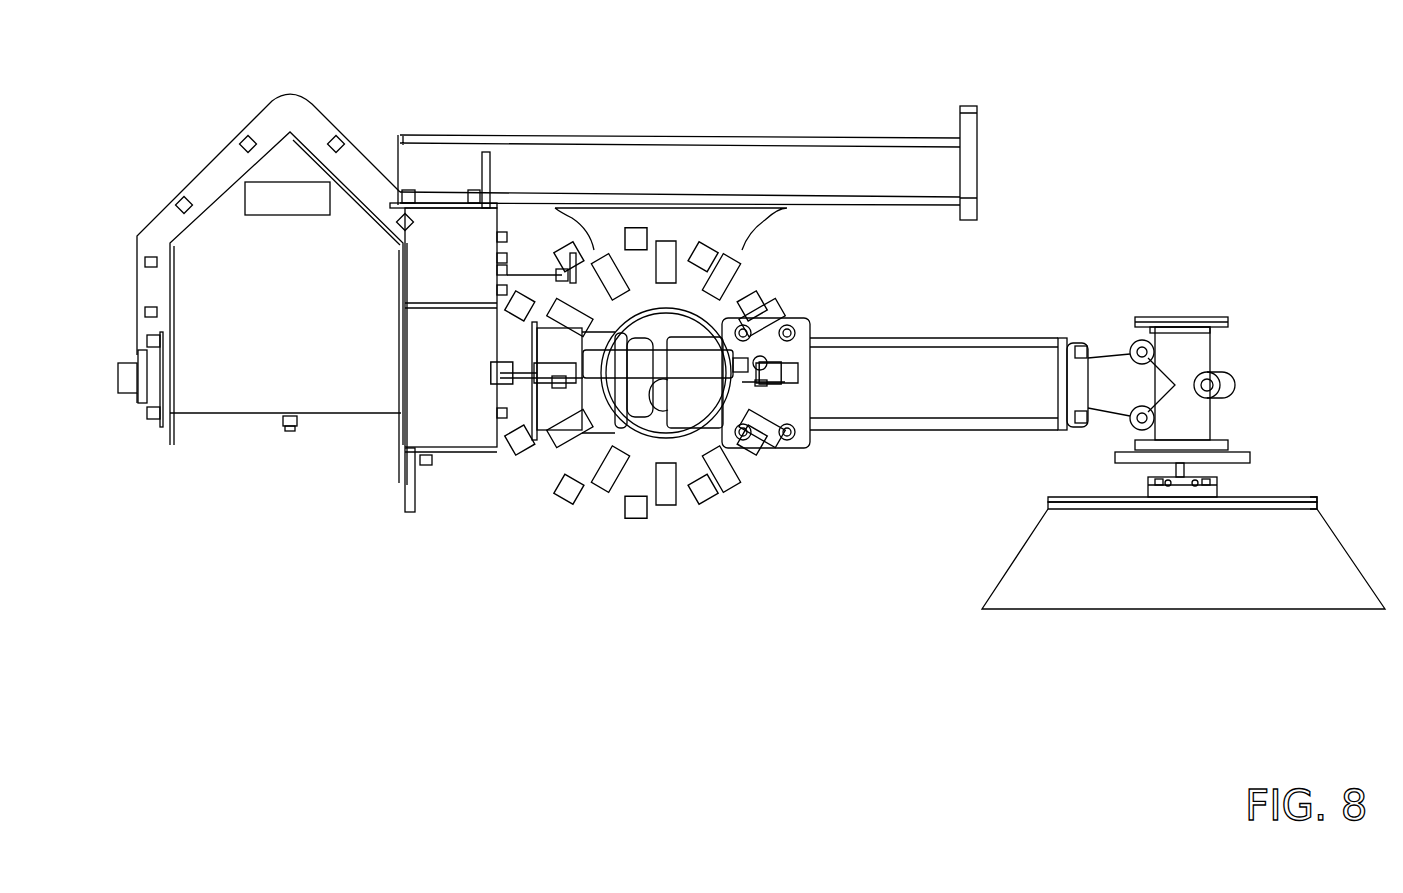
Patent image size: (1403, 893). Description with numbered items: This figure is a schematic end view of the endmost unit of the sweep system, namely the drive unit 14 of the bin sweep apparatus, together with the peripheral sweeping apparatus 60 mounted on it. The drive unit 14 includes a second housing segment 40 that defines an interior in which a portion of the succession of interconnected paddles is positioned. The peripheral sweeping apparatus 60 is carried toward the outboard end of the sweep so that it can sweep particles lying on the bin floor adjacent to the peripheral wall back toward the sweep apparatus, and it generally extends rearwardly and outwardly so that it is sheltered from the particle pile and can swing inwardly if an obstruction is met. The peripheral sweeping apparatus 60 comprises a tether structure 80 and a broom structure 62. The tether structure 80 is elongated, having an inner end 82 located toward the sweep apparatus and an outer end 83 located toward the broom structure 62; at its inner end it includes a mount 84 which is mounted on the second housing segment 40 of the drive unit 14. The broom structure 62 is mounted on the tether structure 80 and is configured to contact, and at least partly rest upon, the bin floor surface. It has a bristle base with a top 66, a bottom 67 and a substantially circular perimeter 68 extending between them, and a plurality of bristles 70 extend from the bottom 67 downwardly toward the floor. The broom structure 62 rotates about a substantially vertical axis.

The drive unit 14 is at (505, 72).
The second housing segment 40 is at (340, 177).
The mount 84 is at (528, 332).
The inner end 82 is at (512, 453).
The tether structure 80 is at (932, 327).
The peripheral sweeping apparatus 60 is at (1062, 210).
The broom structure 62 is at (1297, 358).
The outer end 83 is at (1243, 312).
The top 66 is at (1108, 497).
The bottom 67 is at (1077, 512).
The perimeter 68 is at (1320, 505).
The bristles 70 is at (1003, 582).